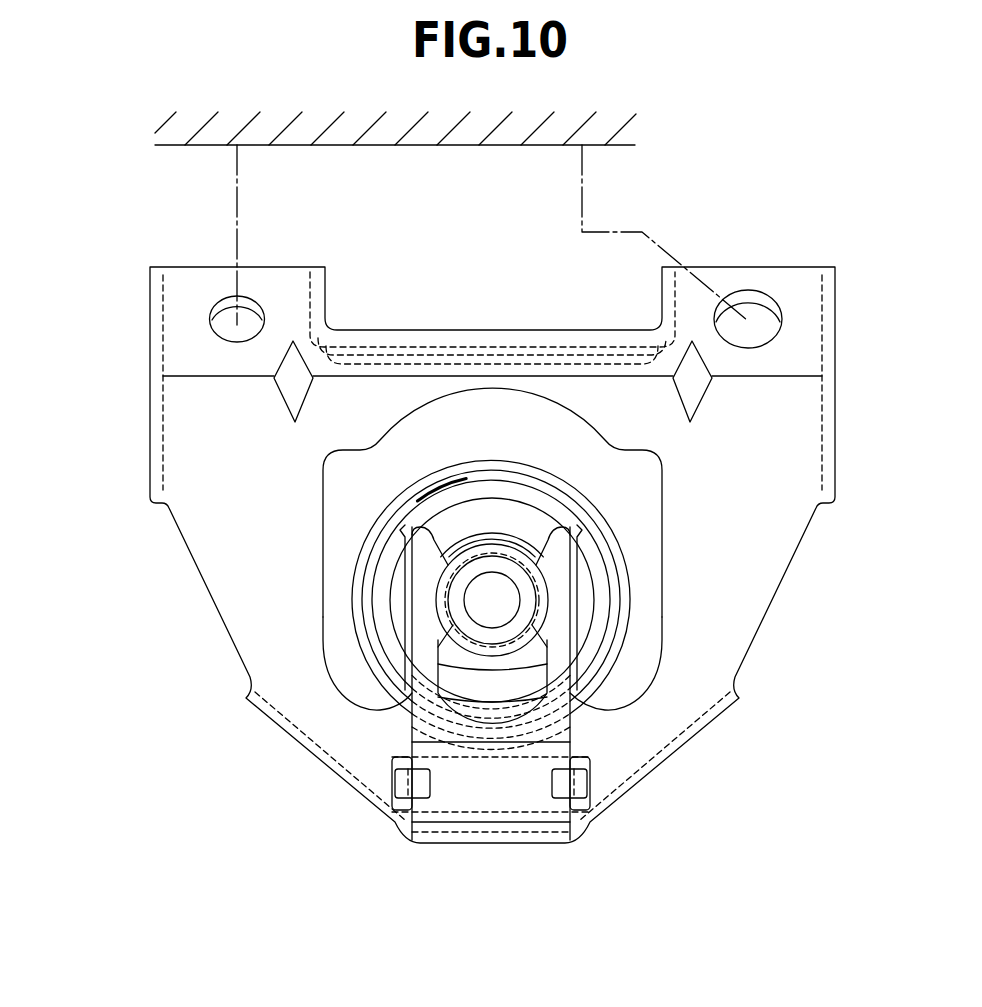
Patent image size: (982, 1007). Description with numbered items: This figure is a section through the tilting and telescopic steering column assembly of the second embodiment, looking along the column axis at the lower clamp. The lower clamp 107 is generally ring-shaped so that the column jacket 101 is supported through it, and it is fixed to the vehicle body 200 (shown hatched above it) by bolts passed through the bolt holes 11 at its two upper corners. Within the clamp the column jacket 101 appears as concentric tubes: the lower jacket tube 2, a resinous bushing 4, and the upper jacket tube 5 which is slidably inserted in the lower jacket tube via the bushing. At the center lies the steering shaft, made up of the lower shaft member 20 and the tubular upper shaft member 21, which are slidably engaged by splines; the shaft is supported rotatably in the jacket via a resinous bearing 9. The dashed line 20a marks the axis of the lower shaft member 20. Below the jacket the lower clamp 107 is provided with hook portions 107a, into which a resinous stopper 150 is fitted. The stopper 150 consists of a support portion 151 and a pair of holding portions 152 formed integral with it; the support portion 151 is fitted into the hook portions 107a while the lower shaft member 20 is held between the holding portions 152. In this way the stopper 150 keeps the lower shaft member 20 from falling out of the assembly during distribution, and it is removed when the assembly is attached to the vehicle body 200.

The vehicle body 200 is at (199, 158).
The lower clamp 107 is at (712, 264).
The bolt holes 11 is at (225, 303).
The column jacket 101 is at (638, 553).
The lower jacket tube 2 is at (440, 474).
The resinous bushing 4 is at (403, 499).
The upper jacket tube 5 is at (387, 562).
The lower shaft member 20 is at (496, 560).
The axis of inner cylinder 20a is at (558, 590).
The upper shaft member 21 is at (473, 657).
The resinous bearing 9 is at (527, 677).
The holding portions 152 is at (423, 609).
The stopper 150 is at (400, 657).
The support portion 151 is at (542, 840).
The hook portions 107a is at (397, 783).